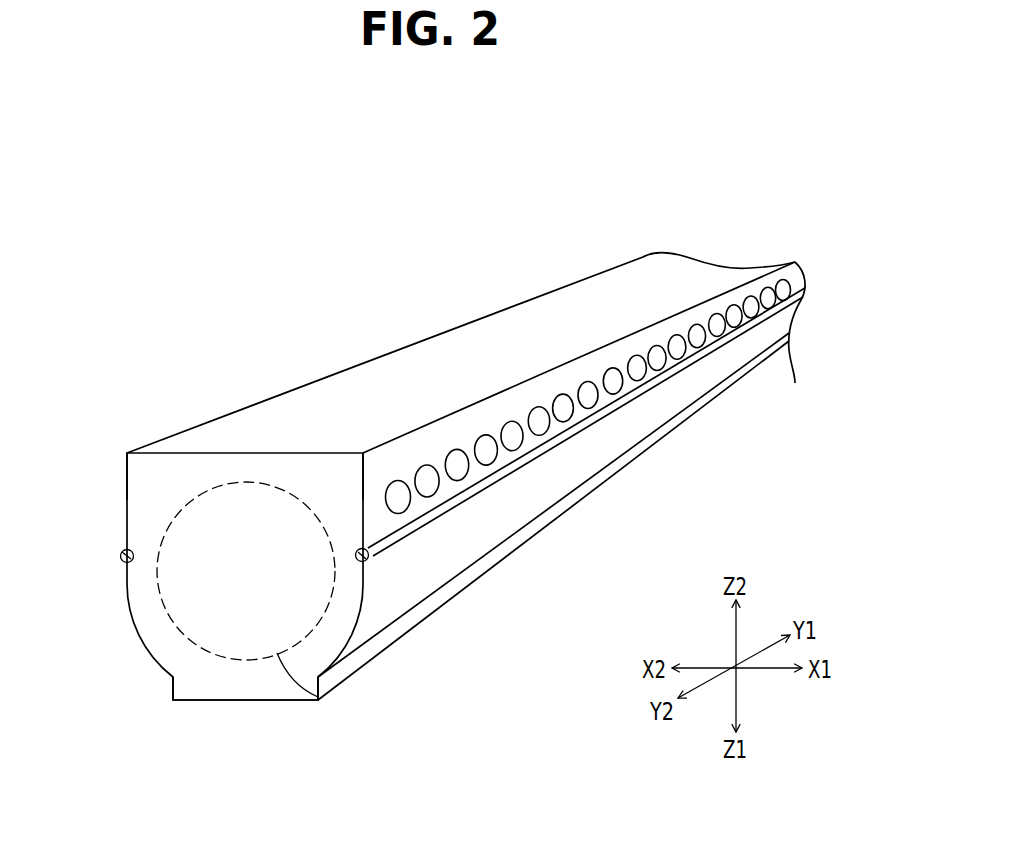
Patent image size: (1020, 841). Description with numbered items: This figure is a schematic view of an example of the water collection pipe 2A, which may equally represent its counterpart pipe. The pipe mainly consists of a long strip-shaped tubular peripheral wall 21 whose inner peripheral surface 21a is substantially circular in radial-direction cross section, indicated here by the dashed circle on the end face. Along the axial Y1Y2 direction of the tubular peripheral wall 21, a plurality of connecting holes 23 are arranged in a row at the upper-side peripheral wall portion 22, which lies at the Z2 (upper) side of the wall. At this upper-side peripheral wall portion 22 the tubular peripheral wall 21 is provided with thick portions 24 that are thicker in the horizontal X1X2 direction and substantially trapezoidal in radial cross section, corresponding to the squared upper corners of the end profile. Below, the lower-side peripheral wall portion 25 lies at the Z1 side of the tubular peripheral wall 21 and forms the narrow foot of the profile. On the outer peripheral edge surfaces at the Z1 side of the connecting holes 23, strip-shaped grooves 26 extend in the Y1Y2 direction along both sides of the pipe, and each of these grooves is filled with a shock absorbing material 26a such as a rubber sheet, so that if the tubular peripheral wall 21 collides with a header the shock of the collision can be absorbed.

The water collection pipe 2A is at (327, 213).
The tubular peripheral wall 21 is at (602, 313).
The inner peripheral surface 21a is at (328, 702).
The upper-side peripheral wall portion 22 is at (210, 455).
The connecting holes 23 is at (539, 405).
The thick portions 24 is at (147, 476).
The lower-side peripheral wall portion 25 is at (247, 686).
The strip-shaped grooves 26 is at (122, 553).
The shock absorbing material 26a is at (123, 563).